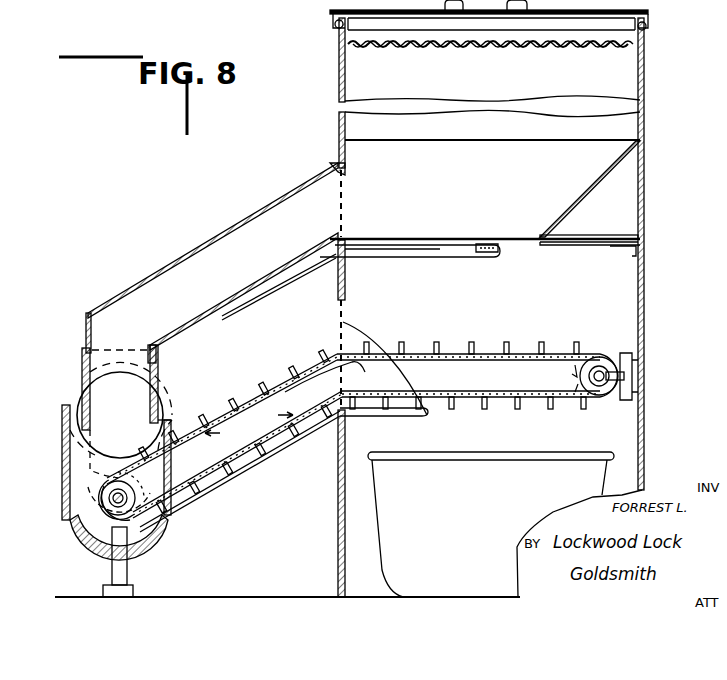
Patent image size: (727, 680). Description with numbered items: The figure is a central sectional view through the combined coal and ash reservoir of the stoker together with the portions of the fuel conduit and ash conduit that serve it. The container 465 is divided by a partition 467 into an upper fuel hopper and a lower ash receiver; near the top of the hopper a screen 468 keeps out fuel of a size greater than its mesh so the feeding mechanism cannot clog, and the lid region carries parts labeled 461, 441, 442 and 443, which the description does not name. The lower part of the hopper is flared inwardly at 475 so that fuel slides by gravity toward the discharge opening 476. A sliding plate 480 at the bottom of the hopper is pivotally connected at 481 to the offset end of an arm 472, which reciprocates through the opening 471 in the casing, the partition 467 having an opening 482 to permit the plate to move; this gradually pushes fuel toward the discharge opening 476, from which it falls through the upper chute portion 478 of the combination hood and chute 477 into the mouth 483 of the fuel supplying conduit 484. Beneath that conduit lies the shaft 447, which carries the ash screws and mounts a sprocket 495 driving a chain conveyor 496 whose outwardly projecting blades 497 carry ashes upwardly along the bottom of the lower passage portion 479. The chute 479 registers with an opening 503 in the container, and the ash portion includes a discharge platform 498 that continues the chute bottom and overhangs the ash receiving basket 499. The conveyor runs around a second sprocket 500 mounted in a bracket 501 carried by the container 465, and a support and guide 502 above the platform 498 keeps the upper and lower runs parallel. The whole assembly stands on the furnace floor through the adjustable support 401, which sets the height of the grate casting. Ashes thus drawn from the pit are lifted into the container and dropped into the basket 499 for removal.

The adjustable support 401 is at (127, 572).
The reference part (top, cut off) 441 is at (95, 0).
The reference part (top, cut off) 442 is at (65, 0).
The reference part (top, cut off) 443 is at (190, 0).
The shaft 447 is at (146, 530).
The cover lid 461 is at (622, 16).
The container 465 is at (644, 90).
The partition 467 is at (612, 250).
The screen 468 is at (618, 48).
The opening 471 is at (338, 250).
The arm 472 is at (406, 258).
The inwardly flared portion 475 is at (600, 183).
The discharge opening 476 is at (339, 172).
The combination hood and chute 477 is at (160, 275).
The upper chute portion 478 is at (185, 273).
The lower passage portion 479 is at (223, 397).
The sliding plate 480 is at (575, 240).
The pivotal connection 481 is at (500, 254).
The opening 482 is at (540, 246).
The mouth 483 is at (95, 365).
The fuel supplying conduit 484 is at (90, 400).
The sprocket 495 is at (92, 528).
The chain conveyor 496 is at (196, 482).
The blades 497 is at (484, 352).
The discharge platform 498 is at (365, 410).
The ash receiving basket 499 is at (593, 474).
The sprocket 500 is at (614, 395).
The bracket 501 is at (628, 373).
The support and guide 502 is at (357, 363).
The opening 503 is at (345, 333).